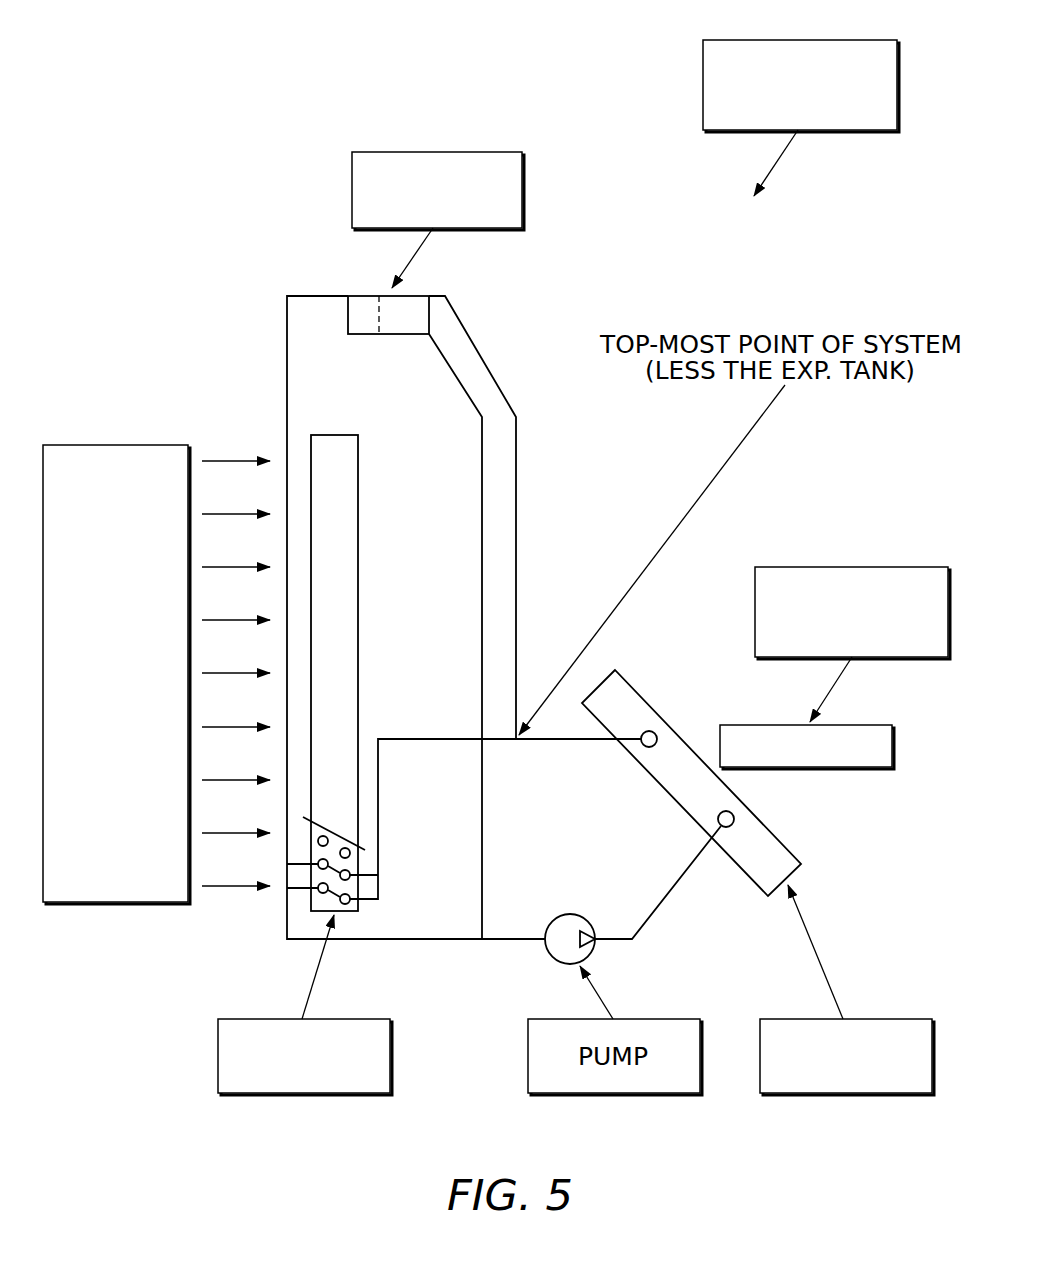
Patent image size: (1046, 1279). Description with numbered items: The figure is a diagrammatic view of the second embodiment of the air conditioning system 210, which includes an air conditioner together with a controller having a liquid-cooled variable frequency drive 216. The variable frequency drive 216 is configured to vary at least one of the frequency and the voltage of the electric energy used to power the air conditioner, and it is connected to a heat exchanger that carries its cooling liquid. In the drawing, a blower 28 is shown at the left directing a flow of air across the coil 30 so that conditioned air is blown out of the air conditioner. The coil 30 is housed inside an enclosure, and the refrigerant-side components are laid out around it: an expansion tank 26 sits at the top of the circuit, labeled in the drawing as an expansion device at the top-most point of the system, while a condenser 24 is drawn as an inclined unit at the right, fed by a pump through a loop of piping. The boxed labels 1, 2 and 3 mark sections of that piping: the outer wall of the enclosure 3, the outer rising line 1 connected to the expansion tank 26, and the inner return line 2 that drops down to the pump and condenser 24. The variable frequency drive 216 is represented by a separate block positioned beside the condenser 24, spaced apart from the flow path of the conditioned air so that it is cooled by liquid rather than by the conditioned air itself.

The outer conduit / supply line 1 is at (518, 455).
The inner conduit / return line 2 is at (482, 513).
The enclosure / housing 3 is at (285, 403).
The condenser 24 is at (814, 1019).
The expansion tank 26 is at (405, 152).
The blower 28 is at (98, 445).
The coil 30 is at (271, 1019).
The air conditioning system 210 is at (770, 40).
The liquid-cooled variable frequency drive 216 is at (823, 567).